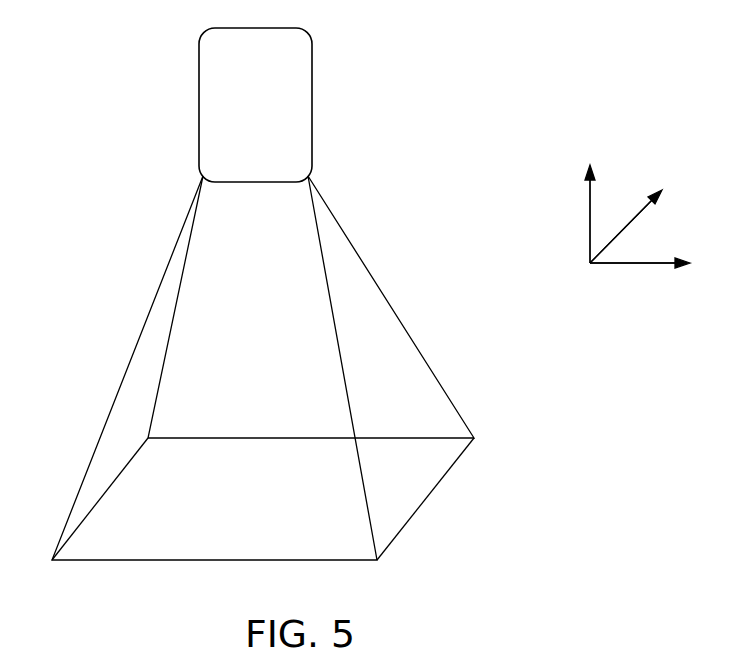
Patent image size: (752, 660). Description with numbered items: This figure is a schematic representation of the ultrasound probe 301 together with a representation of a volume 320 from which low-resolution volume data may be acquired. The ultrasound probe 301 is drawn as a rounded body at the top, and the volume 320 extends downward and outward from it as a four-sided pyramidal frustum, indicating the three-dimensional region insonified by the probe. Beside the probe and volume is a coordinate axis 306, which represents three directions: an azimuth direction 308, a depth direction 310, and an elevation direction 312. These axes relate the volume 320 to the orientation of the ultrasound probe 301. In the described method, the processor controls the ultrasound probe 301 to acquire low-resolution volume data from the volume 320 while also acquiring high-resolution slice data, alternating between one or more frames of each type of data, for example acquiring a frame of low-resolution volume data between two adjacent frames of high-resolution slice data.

The ultrasound probe 301 is at (315, 99).
The volume 320 is at (290, 270).
The coordinate axis 306 is at (580, 272).
The azimuth direction 308 is at (640, 268).
The depth direction 310 is at (588, 206).
The elevation direction 312 is at (635, 222).